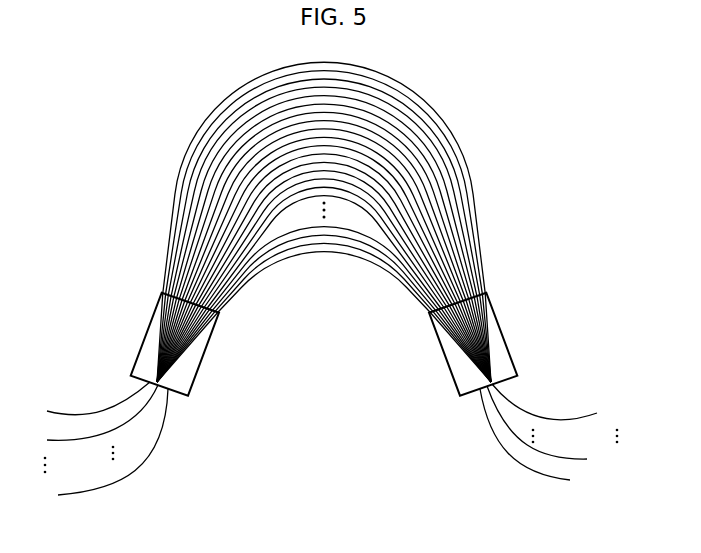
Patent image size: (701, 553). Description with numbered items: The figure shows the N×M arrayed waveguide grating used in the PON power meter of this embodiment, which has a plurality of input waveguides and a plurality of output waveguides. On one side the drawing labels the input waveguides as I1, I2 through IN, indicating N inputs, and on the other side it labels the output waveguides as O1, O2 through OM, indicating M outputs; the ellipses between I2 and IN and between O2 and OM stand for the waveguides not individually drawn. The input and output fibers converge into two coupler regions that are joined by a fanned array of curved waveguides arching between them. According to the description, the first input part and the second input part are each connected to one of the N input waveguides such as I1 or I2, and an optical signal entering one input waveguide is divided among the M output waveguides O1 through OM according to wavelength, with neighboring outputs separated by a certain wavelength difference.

The first input optical fiber I1 is at (87, 401).
The second input optical fiber I2 is at (91, 418).
The N-th input optical fiber IN is at (100, 446).
The first output optical fiber O1 is at (544, 443).
The second output optical fiber O2 is at (555, 429).
The M-th output optical fiber OM is at (563, 403).